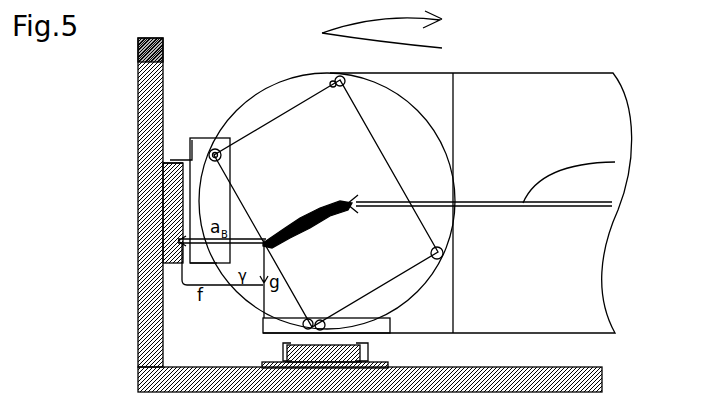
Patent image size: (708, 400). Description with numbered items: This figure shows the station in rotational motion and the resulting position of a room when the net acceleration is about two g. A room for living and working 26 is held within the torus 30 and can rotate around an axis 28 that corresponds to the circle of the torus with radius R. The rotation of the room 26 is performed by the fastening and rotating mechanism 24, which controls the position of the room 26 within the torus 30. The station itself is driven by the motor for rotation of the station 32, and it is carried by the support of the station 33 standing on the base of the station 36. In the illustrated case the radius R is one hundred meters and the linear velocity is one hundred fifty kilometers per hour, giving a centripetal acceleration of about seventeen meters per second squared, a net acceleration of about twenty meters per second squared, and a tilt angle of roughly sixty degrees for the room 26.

The fastening and rotating mechanism 24 is at (441, 262).
The rooms for living and working 26 is at (368, 132).
The axis for rotation of the rooms 28 is at (188, 276).
The torus 30 is at (397, 101).
The motor for rotation of the station 32 is at (141, 368).
The support of the station 33 is at (174, 160).
The base of the station 36 is at (163, 62).
The radius of the circle of the torus R is at (615, 162).